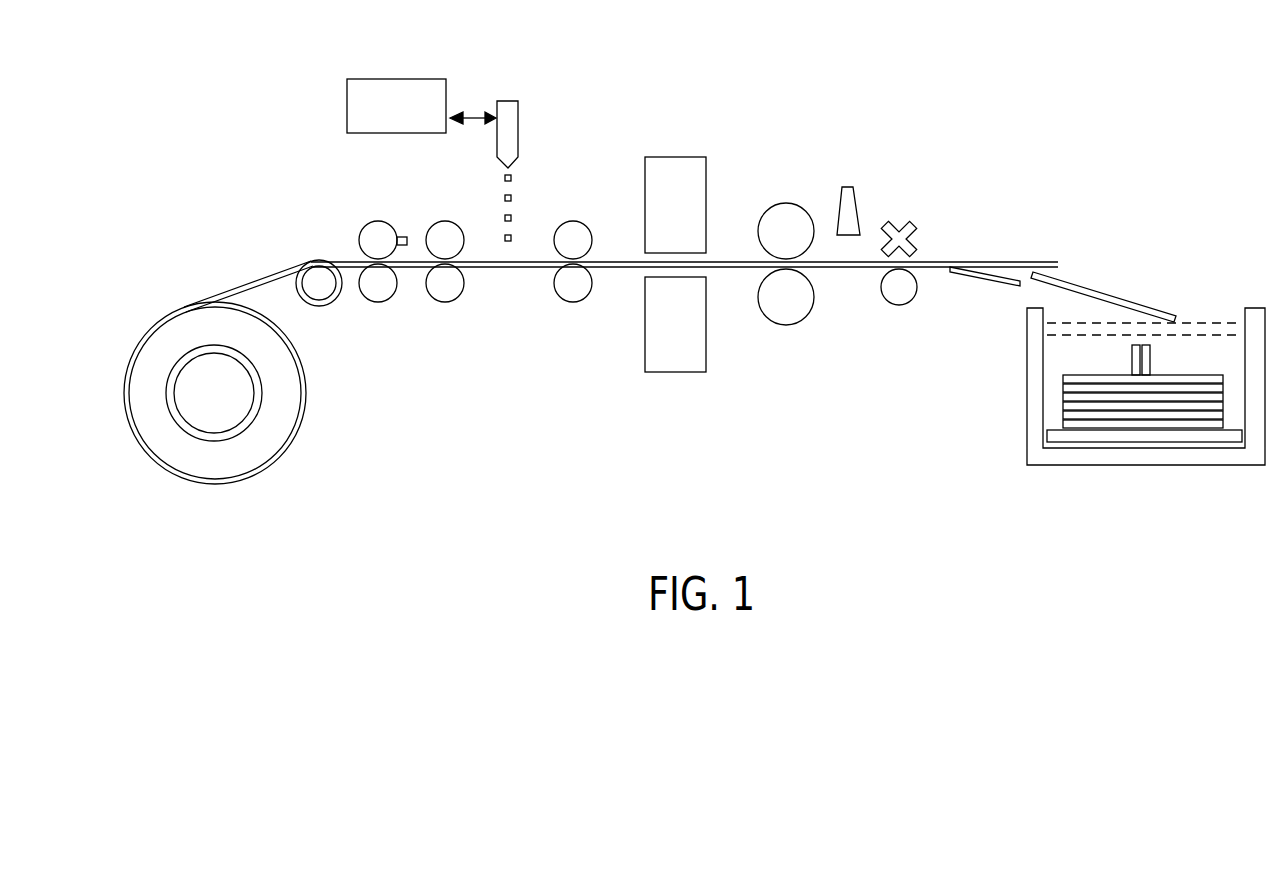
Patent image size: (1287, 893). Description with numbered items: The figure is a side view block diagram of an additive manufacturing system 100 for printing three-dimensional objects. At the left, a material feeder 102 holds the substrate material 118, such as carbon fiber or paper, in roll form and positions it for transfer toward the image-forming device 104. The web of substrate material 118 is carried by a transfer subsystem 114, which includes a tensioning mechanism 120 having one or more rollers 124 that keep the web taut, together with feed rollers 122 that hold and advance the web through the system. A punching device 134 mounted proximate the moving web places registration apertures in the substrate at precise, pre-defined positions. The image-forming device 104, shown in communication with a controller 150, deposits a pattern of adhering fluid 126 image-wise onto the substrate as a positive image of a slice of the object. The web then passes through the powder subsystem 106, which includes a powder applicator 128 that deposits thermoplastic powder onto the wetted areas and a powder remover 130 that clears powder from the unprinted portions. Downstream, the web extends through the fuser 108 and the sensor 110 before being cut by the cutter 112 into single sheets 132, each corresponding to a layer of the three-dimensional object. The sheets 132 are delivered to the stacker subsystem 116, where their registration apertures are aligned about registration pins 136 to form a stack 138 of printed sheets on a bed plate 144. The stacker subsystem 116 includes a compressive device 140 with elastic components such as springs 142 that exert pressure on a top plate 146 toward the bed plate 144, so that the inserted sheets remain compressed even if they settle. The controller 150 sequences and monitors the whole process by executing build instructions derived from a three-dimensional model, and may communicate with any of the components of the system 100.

The AM system 100 is at (248, 108).
The material feeder 102 is at (214, 485).
The image-forming device 104 is at (510, 100).
The powder subsystem 106 is at (704, 133).
The fuser 108 is at (786, 203).
The sensor 110 is at (847, 183).
The cutter 112 is at (897, 218).
The transfer subsystem 114 is at (327, 233).
The stacker subsystem 116 is at (1073, 488).
The substrate material 118 is at (256, 282).
The tensioning mechanism 120 is at (283, 236).
The feed rollers 122 is at (442, 221).
The rollers 124 is at (318, 305).
The fluid 126 is at (515, 198).
The powder applicator 128 is at (675, 157).
The powder remover 130 is at (677, 372).
The single sheets 132 is at (1082, 285).
The punching device 134 is at (375, 221).
The registration pins 136 is at (1130, 366).
The stack 138 is at (1045, 394).
The compressive device 140 is at (1243, 292).
The springs 142 is at (1152, 308).
The bed plate 144 is at (1047, 437).
The top plate 146 is at (1200, 320).
The controller 150 is at (395, 78).